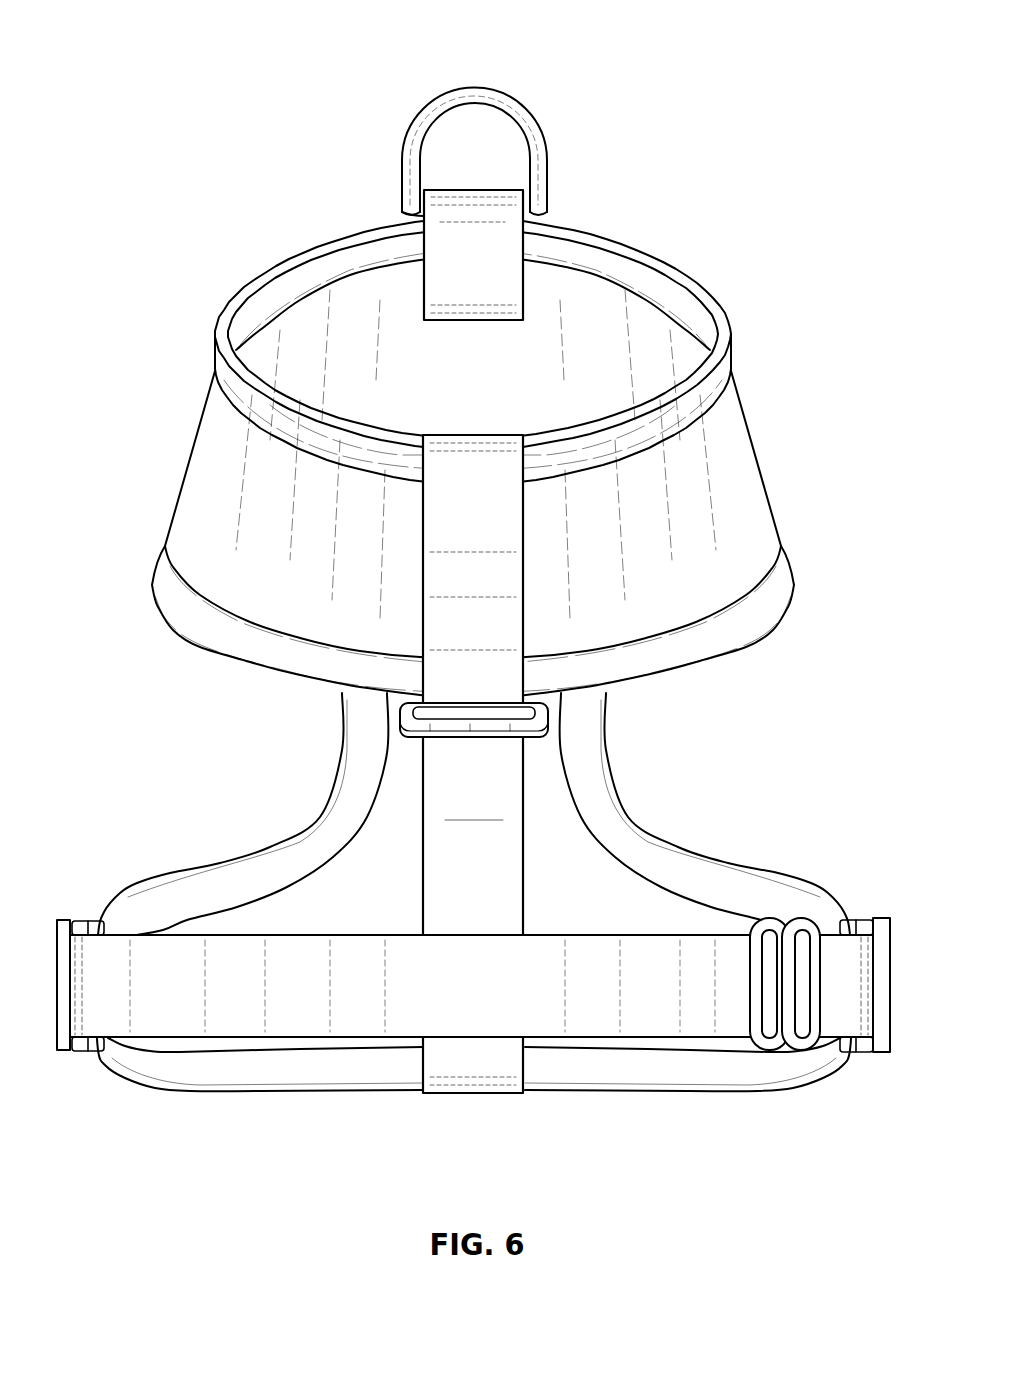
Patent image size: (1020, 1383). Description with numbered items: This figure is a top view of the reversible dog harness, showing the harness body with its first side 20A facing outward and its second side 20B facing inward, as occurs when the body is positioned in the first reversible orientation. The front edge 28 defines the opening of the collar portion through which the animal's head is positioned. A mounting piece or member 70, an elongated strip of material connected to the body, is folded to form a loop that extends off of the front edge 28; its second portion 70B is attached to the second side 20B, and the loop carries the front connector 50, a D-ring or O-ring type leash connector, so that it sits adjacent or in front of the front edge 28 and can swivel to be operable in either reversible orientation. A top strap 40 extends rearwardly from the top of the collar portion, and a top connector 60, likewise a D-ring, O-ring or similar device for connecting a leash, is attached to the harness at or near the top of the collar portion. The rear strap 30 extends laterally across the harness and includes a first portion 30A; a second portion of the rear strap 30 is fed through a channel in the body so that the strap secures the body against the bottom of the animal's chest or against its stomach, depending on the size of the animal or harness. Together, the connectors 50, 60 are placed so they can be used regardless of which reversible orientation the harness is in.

The first side 20A is at (248, 468).
The second side 20B is at (593, 315).
The front edge 28 is at (382, 170).
The rear strap 30 is at (350, 1075).
The first portion 30A is at (233, 1005).
The top strap 40 is at (659, 764).
The front connector 50 is at (520, 113).
The top connector 60 is at (570, 714).
The mounting piece or member 70 is at (529, 162).
The second portion 70B is at (529, 227).